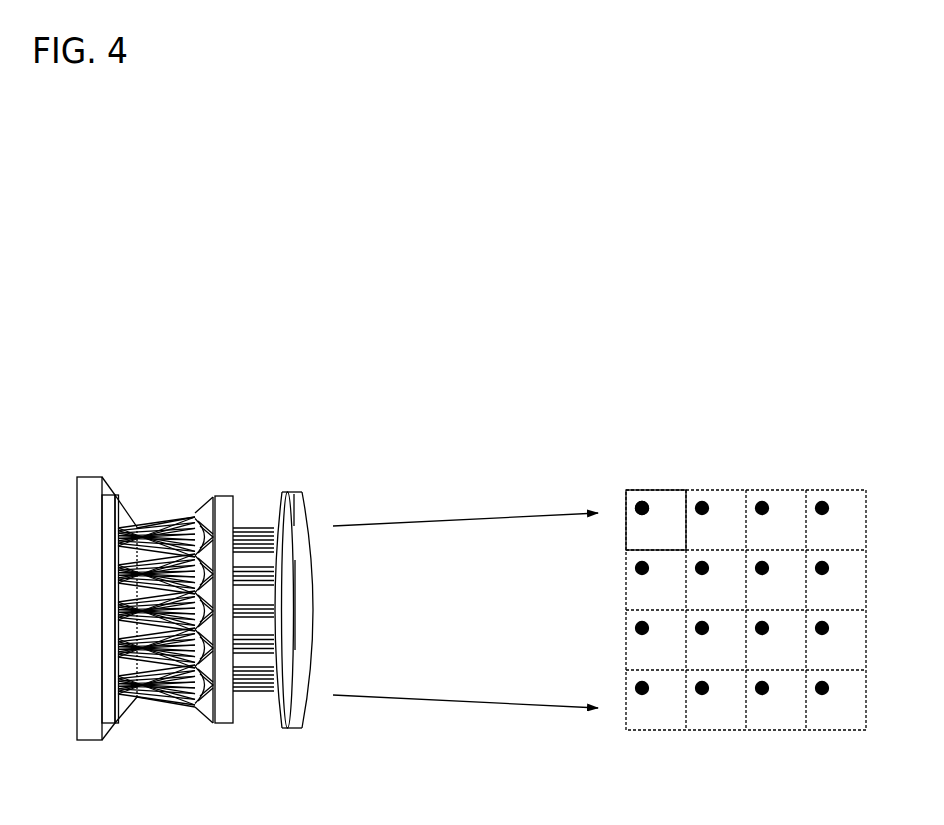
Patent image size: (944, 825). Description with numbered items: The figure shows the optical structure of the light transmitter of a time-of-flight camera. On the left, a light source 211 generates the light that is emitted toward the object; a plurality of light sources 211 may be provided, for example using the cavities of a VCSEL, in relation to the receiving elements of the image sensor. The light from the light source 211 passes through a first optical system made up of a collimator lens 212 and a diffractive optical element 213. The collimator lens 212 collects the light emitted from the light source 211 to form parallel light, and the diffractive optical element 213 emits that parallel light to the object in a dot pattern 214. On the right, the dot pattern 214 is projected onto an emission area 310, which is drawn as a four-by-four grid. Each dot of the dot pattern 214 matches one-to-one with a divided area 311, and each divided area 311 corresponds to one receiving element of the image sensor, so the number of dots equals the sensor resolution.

The light source 211 is at (87, 478).
The collimator lens 212 is at (223, 496).
The diffractive optical element 213 is at (290, 490).
The dot pattern 214 is at (633, 497).
The divided area 311 is at (665, 490).
The emission area 310 is at (735, 490).